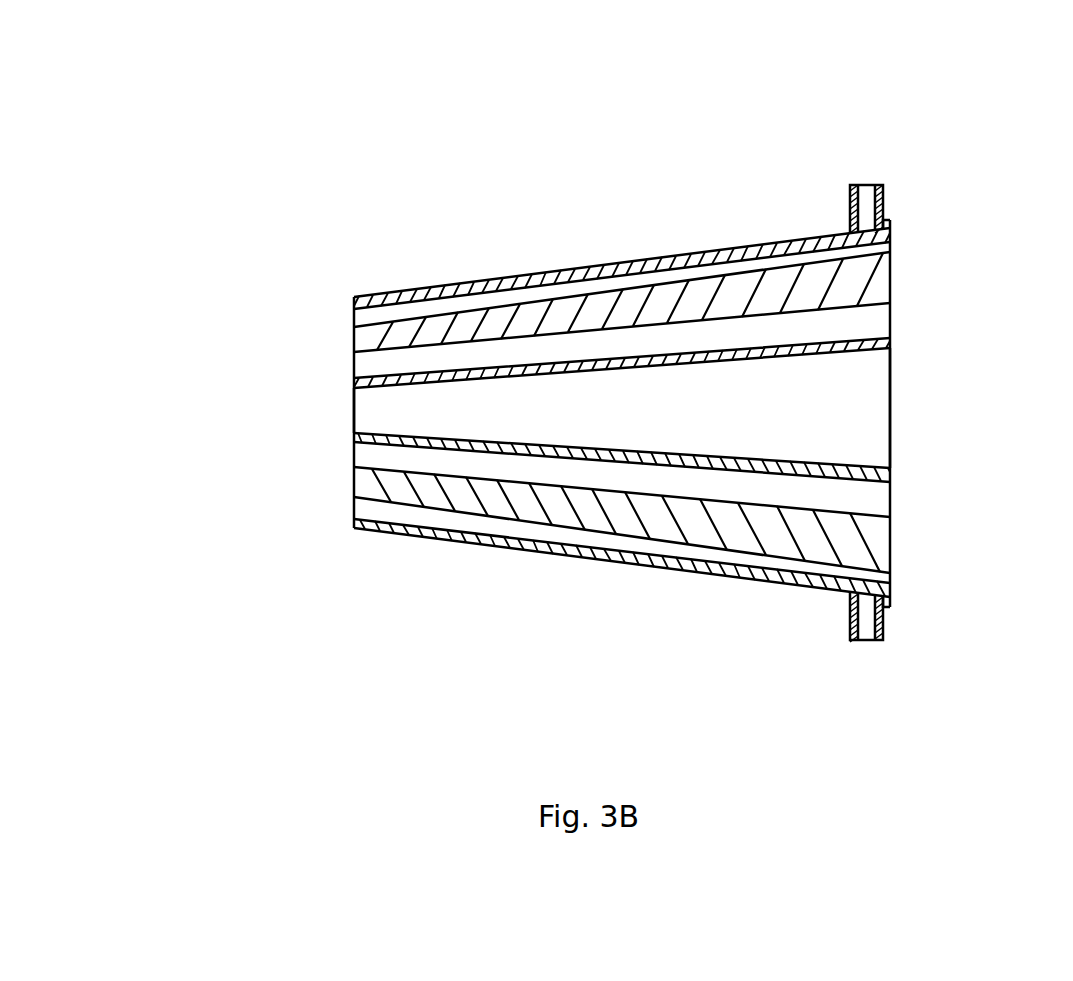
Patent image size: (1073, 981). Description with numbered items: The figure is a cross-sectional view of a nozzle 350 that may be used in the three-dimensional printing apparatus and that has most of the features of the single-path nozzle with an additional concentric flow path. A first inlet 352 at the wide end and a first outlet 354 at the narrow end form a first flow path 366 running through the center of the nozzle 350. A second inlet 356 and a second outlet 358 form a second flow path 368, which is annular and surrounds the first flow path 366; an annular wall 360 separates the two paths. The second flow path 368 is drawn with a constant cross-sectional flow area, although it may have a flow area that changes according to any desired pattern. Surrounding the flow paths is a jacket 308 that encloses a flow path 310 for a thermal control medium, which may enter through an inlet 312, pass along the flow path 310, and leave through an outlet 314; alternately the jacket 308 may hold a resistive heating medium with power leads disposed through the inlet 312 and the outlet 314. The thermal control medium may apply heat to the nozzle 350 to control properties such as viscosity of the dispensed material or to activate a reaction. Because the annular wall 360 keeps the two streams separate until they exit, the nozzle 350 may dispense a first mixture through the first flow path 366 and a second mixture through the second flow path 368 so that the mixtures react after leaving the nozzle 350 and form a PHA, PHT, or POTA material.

The nozzle 350 is at (883, 128).
The jacket 308 is at (458, 282).
The flow path 310 is at (730, 265).
The second flow path 368 is at (545, 347).
The second outlet 358 is at (352, 367).
The first flow path 366 is at (681, 424).
The annular wall 360 is at (348, 437).
The first outlet 354 is at (352, 412).
The first inlet 352 is at (892, 410).
The second inlet 356 is at (892, 315).
The inlet 312 is at (863, 185).
The outlet 314 is at (883, 633).